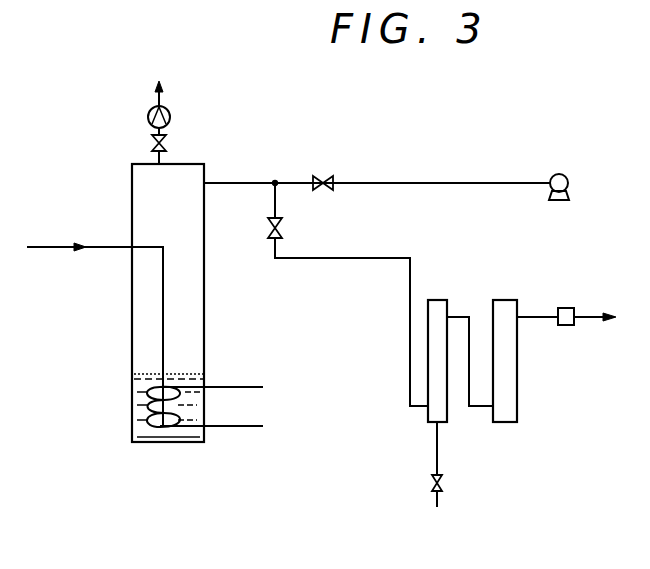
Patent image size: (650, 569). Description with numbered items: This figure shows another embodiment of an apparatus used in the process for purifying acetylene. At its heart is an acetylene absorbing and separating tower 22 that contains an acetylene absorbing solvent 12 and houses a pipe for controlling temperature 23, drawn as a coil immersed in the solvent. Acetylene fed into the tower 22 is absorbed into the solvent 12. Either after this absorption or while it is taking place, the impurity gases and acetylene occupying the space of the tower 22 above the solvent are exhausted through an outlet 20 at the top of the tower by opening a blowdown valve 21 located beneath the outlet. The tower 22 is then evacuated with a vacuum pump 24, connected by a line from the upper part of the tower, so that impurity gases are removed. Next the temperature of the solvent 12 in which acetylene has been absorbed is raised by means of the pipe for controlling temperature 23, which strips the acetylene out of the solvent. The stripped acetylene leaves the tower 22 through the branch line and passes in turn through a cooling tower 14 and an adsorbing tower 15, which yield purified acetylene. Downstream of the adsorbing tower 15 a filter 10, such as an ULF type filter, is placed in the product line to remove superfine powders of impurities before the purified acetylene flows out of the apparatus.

The filter 10 is at (577, 308).
The acetylene absorbing solvent 12 is at (183, 433).
The cooling tower 14 is at (443, 414).
The adsorbing tower 15 is at (509, 414).
The outlet 20 is at (149, 109).
The blowdown valve 21 is at (151, 141).
The acetylene absorbing and separating tower 22 is at (130, 430).
The pipe for controlling temperature 23 is at (250, 428).
The vacuum pump 24 is at (568, 178).